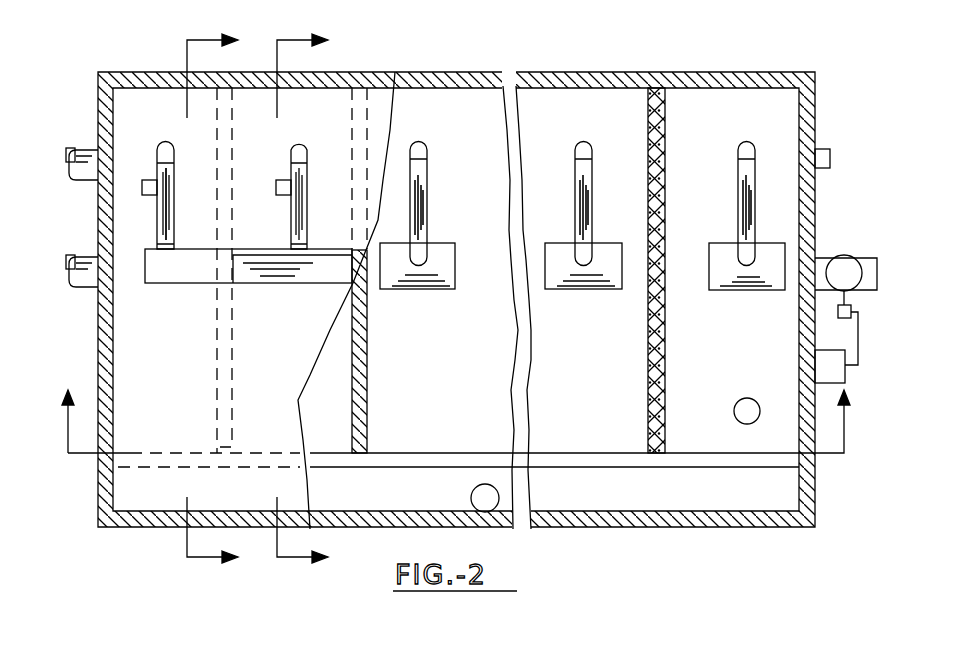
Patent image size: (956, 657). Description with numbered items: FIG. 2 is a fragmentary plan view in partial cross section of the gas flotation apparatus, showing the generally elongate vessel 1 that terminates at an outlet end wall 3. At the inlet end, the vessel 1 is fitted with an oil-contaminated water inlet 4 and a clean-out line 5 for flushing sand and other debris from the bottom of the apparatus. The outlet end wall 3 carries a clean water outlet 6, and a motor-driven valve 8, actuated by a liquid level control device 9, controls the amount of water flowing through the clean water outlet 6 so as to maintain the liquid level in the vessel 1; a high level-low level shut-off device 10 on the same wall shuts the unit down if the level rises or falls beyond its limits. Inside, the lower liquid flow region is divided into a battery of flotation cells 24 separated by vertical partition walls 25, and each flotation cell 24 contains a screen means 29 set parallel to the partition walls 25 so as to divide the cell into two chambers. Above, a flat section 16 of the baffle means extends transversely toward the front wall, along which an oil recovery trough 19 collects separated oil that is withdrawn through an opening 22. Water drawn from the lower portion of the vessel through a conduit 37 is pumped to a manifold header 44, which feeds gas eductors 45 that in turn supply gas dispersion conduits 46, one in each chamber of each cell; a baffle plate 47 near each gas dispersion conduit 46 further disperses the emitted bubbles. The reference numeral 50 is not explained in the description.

The vessel 1 is at (172, 72).
The outlet end wall 3 is at (453, 421).
The oil-contaminated water inlet 4 is at (76, 148).
The clean-out line 5 is at (76, 255).
The clean water outlet 6 is at (877, 280).
The motor-driven valve 8 is at (841, 255).
The liquid level control device 9 is at (845, 377).
The high level-low level shut-off device 10 is at (830, 155).
The flat section 16 is at (186, 345).
The oil recovery trough 19 is at (608, 512).
The opening 22 is at (488, 512).
The flotation cell 24 is at (332, 410).
The partition wall 25 is at (368, 403).
The screen means 29 is at (665, 362).
The conduit 37 is at (784, 414).
The manifold header 44 is at (166, 283).
The gas eductor 45 is at (175, 180).
The gas dispersion conduit 46 is at (167, 141).
The baffle plate 47 is at (397, 290).
The holder 50 is at (142, 190).